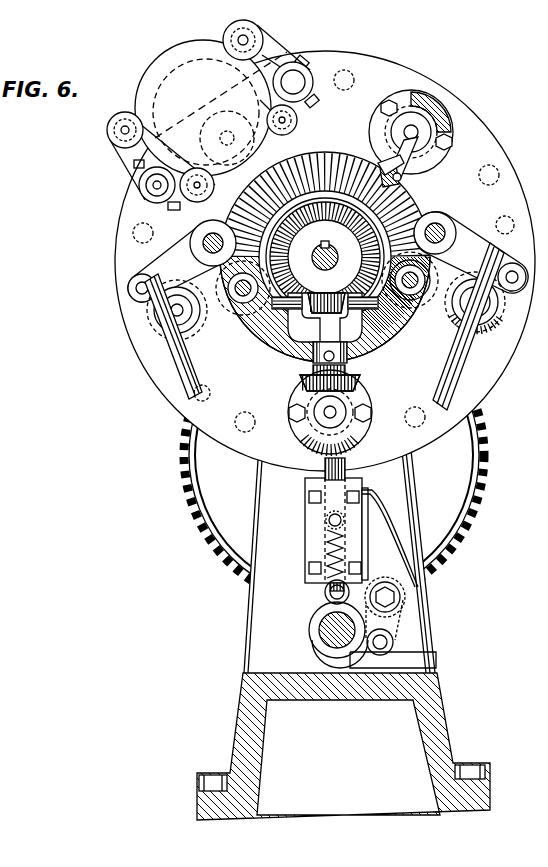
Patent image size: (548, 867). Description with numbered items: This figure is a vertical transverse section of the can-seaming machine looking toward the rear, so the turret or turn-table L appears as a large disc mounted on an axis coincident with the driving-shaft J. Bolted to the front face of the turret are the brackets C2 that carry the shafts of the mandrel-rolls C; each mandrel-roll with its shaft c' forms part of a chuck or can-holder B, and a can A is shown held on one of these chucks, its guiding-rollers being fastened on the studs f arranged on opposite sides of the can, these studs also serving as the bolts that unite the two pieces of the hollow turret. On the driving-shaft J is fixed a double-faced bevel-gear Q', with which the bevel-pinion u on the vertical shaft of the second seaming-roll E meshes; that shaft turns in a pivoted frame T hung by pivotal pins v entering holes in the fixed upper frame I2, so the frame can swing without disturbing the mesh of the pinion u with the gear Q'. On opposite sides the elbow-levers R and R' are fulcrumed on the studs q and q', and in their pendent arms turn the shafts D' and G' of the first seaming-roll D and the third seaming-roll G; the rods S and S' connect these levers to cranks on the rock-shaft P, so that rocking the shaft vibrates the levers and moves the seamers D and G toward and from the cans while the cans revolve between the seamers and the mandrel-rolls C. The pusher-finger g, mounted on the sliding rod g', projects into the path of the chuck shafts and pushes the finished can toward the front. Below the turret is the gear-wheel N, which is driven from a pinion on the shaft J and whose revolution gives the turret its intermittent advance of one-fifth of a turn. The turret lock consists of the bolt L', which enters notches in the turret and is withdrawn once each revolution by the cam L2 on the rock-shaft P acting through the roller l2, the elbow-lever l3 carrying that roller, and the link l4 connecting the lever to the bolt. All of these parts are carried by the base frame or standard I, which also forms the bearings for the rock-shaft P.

The can A is at (211, 108).
The chuck or can-holder B is at (213, 115).
The mandrel-roll C is at (404, 104).
The bracket C2 is at (352, 435).
The turret or turn-table L is at (325, 261).
The stud f is at (334, 78).
The pusher-finger g is at (409, 164).
The sliding rod g' is at (378, 156).
The stud q is at (210, 237).
The stud q' is at (442, 223).
The double-faced bevel-gear Q' is at (325, 257).
The driving-shaft J is at (325, 257).
The bevel-pinion u is at (333, 295).
The pivotal pins v is at (325, 315).
The pivoted frame T is at (325, 328).
The upper frame I2 is at (296, 342).
The second seaming-roll E is at (356, 380).
The elbow-lever R is at (180, 263).
The shaft of seaming-roll D D' is at (243, 288).
The first seaming-roll D is at (192, 315).
The rod S is at (171, 342).
The shaft of seaming-roll G G' is at (410, 280).
The elbow-lever R' is at (471, 252).
The third seaming-roll G is at (410, 302).
The shaft of the mandrel-roll c' is at (471, 316).
The rod S' is at (468, 326).
The bolt L' is at (346, 524).
The gear-wheel N is at (218, 536).
The link l4 is at (325, 588).
The rock-shaft P is at (330, 628).
The cam L2 is at (320, 646).
The elbow-lever l3 is at (392, 612).
The roller l2 is at (393, 643).
The base frame or standard I is at (343, 746).